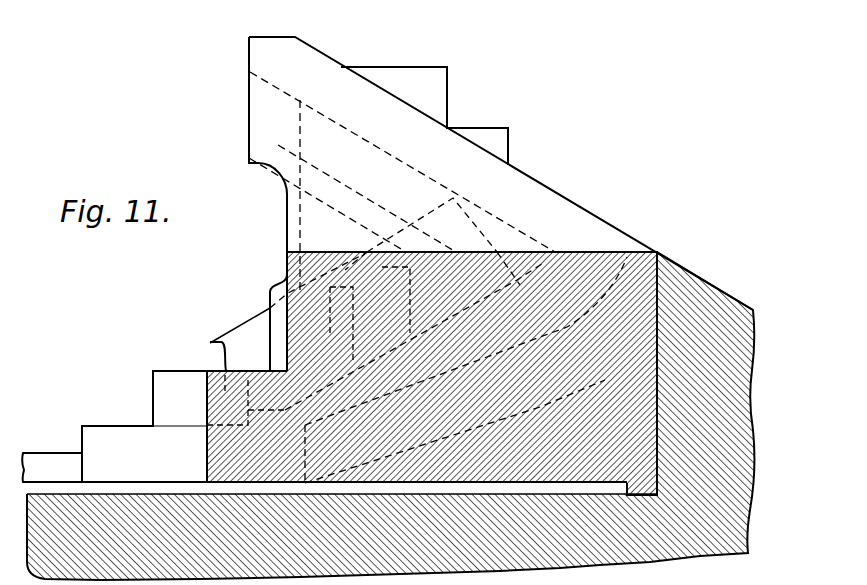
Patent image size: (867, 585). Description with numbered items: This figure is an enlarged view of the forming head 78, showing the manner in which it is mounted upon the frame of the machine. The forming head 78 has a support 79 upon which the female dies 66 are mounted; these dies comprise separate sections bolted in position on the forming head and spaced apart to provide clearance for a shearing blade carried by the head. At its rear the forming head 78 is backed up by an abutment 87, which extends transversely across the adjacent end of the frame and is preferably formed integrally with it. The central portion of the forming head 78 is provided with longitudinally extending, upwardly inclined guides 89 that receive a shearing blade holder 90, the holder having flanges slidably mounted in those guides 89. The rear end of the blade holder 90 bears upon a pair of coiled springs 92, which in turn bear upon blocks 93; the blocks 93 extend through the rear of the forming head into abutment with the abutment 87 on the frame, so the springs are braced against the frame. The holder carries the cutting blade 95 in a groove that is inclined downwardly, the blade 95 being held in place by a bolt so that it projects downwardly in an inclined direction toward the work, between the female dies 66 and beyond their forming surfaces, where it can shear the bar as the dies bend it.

The female dies 66 is at (172, 383).
The forming head 78 is at (507, 182).
The support 79 is at (144, 454).
The abutment 87 is at (730, 297).
The guides 89 is at (278, 145).
The shearing blade holder 90 is at (530, 245).
The coiled springs 92 is at (627, 252).
The blocks 93 is at (660, 252).
The cutting blade 95 is at (260, 342).